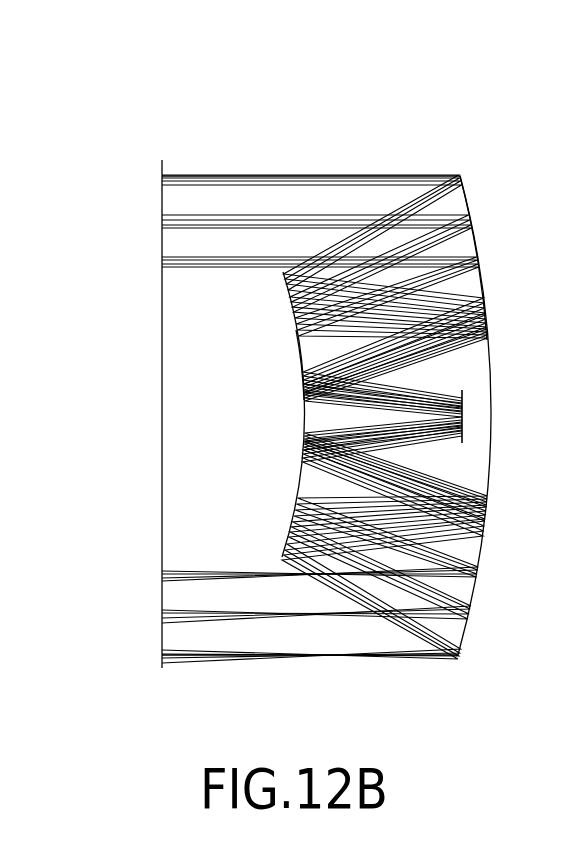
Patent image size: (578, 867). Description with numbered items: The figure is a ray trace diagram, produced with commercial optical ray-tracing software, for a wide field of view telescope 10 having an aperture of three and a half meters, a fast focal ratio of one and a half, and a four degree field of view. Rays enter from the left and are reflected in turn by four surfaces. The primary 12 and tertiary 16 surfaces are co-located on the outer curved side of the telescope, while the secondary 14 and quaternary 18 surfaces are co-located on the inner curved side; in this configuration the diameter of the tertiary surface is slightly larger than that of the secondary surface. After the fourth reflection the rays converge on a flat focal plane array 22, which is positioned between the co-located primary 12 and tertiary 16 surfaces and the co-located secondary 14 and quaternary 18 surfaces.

The wide field of view telescope 10 is at (168, 110).
The primary surface 12 is at (476, 233).
The secondary surface 14 is at (291, 307).
The tertiary surface 16 is at (481, 279).
The quaternary surface 18 is at (298, 344).
The flat focal plane array 22 is at (464, 421).